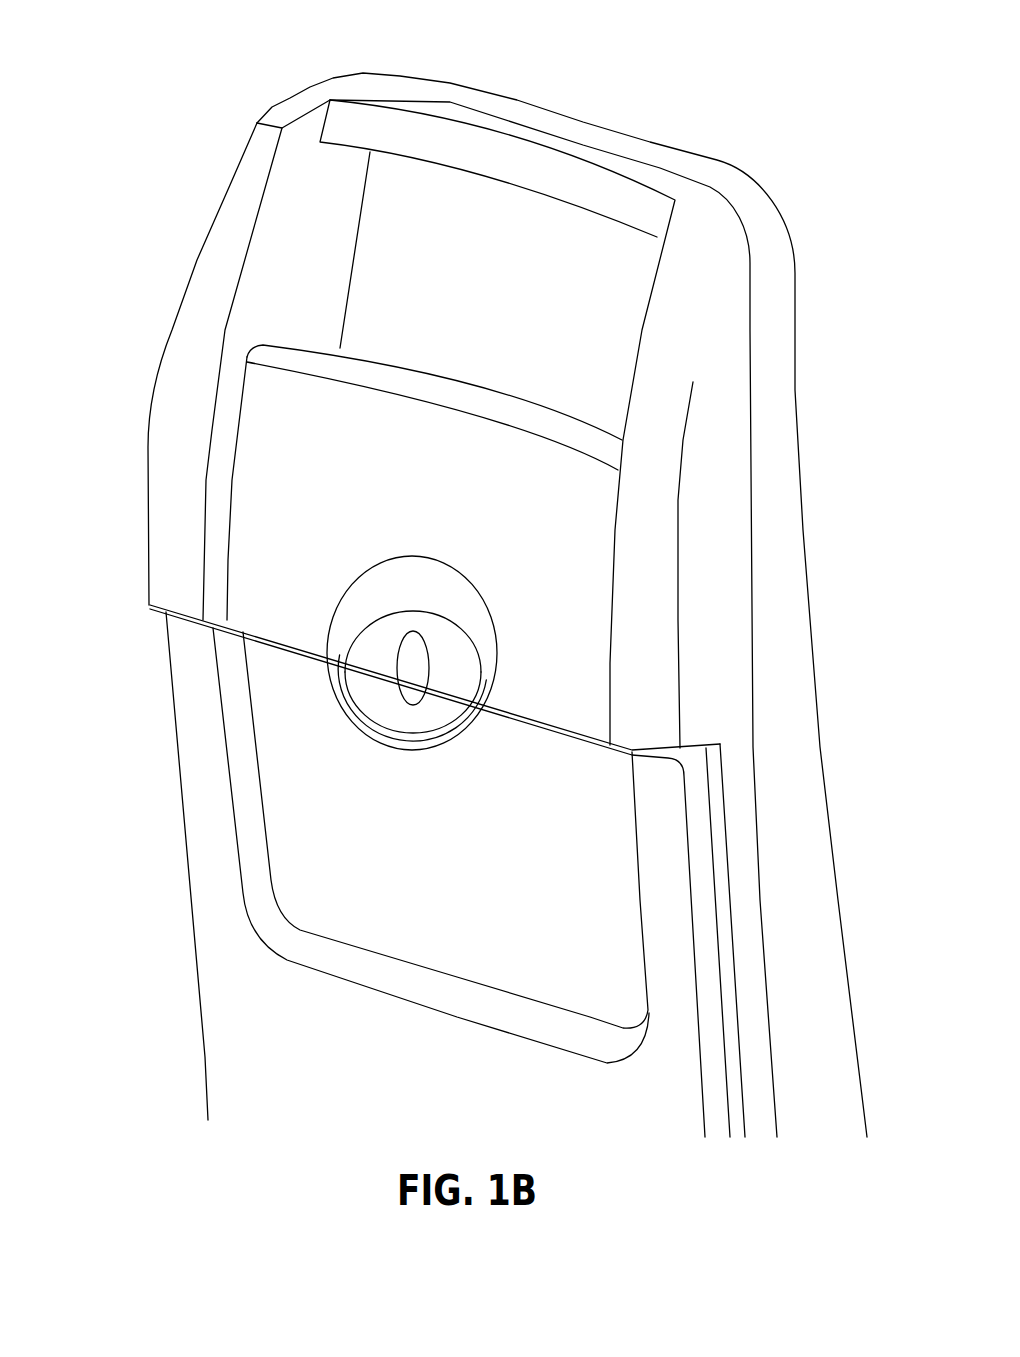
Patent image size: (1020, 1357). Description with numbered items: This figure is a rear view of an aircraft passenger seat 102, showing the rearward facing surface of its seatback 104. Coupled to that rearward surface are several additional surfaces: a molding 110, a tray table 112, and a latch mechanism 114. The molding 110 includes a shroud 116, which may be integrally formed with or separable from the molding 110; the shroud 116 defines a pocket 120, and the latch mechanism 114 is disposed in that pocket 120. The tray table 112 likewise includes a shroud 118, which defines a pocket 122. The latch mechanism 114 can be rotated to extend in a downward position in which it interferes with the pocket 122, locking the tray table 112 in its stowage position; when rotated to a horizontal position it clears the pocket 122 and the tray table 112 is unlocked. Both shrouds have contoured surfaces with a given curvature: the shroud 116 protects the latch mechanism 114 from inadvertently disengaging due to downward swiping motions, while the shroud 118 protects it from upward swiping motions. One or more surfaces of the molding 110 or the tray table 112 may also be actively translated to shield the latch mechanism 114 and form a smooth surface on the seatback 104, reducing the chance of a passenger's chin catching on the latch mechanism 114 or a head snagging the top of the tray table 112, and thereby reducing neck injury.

The passenger seat 102 is at (77, 34).
The seatback 104 is at (790, 878).
The molding 110 is at (732, 313).
The tray table 112 is at (718, 1103).
The latch mechanism 114 is at (417, 658).
The shroud 116 is at (432, 590).
The shroud 118 is at (475, 732).
The pocket 120 is at (370, 642).
The pocket 122 is at (373, 683).